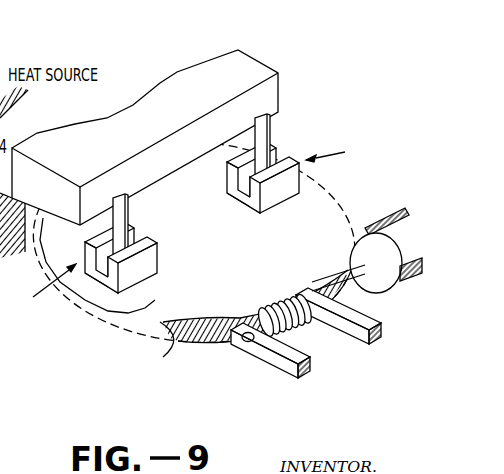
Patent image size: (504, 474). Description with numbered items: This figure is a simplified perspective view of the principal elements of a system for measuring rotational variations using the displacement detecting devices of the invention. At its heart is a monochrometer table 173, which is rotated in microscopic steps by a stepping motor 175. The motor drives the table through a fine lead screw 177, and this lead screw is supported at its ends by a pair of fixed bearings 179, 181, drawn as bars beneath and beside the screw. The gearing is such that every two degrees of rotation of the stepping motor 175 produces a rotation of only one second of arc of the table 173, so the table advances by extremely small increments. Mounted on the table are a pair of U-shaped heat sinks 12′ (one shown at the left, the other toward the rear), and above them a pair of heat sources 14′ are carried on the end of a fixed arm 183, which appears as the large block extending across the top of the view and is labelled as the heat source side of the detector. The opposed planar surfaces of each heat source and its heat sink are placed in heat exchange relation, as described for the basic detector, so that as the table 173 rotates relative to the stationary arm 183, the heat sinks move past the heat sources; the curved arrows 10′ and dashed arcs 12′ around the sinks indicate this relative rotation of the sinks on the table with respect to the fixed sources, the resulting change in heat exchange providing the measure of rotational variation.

The fixed arm 183 is at (258, 70).
The heat source 14' is at (129, 243).
The first rotation direction arrow 10' is at (84, 267).
The U-shaped heat sink 12' is at (192, 242).
The monochrometer table 173 is at (167, 350).
The stepping motor 175 is at (350, 240).
The fine lead screw 177 is at (310, 327).
The fixed bearing 179 is at (246, 342).
The fixed bearing 181 is at (372, 305).